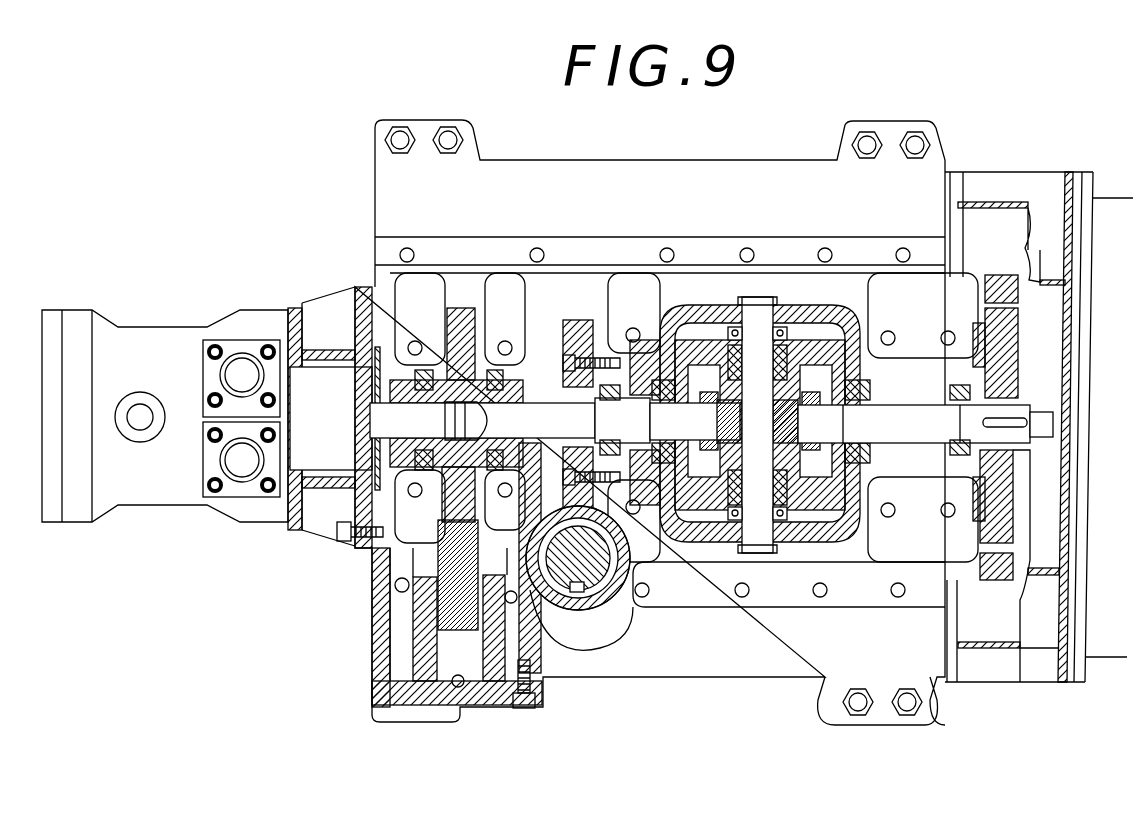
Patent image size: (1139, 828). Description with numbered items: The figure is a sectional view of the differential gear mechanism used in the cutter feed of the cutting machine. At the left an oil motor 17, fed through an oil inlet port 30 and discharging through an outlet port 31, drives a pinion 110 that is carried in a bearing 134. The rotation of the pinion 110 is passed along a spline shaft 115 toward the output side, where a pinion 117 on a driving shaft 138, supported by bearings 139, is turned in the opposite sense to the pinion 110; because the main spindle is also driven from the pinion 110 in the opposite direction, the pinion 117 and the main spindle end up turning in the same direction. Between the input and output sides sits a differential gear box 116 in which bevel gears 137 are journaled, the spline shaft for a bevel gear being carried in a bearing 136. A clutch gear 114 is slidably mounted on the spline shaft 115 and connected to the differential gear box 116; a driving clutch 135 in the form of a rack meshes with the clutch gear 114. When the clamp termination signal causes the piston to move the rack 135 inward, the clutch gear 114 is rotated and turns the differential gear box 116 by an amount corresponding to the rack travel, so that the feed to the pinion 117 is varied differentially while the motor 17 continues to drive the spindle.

The oil motor 17 is at (172, 375).
The oil inlet port 30 is at (238, 367).
The outlet port 31 is at (243, 468).
The pinion 110 is at (467, 320).
The clutch gear 114 is at (589, 427).
The spline shaft 115 is at (523, 403).
The differential gear box 116 is at (722, 305).
The pinion 117 is at (1039, 427).
The bearing 134 is at (428, 370).
The driving clutch (rack) 135 is at (593, 570).
The bearing 136 is at (613, 467).
The bevel gears 137 is at (797, 353).
The driving shaft 138 is at (937, 439).
The bearings 139 is at (973, 460).